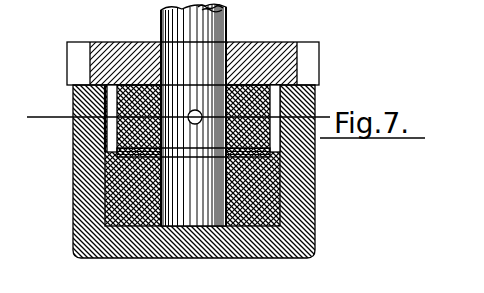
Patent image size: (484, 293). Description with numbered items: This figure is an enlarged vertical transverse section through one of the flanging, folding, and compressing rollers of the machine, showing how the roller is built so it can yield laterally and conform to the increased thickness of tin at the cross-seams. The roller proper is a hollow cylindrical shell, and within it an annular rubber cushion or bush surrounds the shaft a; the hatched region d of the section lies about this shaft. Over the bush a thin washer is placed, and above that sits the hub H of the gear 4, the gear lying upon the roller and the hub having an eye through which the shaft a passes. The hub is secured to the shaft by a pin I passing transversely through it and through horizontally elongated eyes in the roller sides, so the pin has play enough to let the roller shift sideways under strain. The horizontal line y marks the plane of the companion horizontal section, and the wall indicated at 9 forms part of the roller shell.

The gear 4 is at (202, 63).
The bushing d is at (192, 155).
The hub H is at (253, 118).
The shaft a is at (193, 115).
The pin I is at (191, 111).
The section line y is at (179, 118).
The housing wall 9 is at (315, 165).